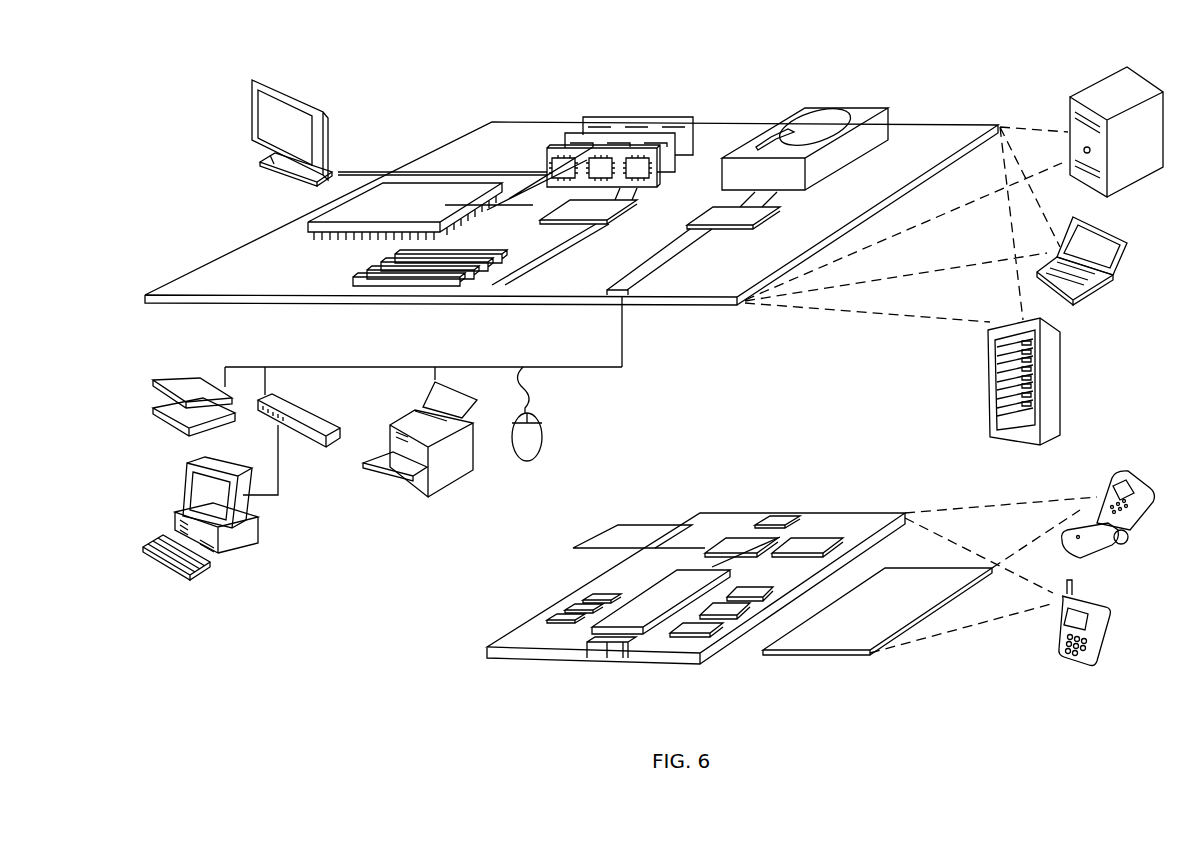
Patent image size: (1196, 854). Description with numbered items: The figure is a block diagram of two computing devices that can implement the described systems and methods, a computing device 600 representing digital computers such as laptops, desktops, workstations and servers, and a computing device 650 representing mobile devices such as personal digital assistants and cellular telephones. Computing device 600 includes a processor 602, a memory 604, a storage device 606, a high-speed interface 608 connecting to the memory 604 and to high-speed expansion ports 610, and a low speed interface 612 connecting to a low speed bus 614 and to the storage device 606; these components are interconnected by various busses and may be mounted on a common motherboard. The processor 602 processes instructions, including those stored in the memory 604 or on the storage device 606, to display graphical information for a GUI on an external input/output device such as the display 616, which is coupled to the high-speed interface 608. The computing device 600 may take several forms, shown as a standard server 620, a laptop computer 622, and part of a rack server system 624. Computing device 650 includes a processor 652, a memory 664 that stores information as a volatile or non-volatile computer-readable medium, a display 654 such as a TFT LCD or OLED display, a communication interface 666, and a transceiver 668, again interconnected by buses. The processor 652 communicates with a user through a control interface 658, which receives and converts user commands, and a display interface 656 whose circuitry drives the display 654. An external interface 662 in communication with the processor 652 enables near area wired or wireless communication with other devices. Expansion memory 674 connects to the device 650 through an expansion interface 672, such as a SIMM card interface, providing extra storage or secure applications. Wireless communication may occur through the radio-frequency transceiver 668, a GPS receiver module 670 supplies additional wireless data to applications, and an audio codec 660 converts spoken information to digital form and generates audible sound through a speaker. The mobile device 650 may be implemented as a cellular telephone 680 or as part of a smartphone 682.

The computing device 600 is at (424, 101).
The processor 602 is at (307, 224).
The memory 604 is at (603, 118).
The storage device 606 is at (800, 110).
The high-speed interface 608 is at (563, 203).
The high-speed expansion ports 610 is at (358, 273).
The low speed interface 612 is at (718, 213).
The low speed bus 614 is at (628, 292).
The display 616 is at (254, 80).
The standard server 620 is at (1067, 116).
The laptop computer 622 is at (1125, 236).
The rack server system 624 is at (988, 404).
The computing device 650 is at (468, 656).
The processor 652 is at (638, 622).
The display 654 is at (848, 640).
The display interface 656 is at (700, 628).
The control interface 658 is at (737, 608).
The audio codec 660 is at (748, 590).
The external interface 662 is at (607, 653).
The memory 664 is at (565, 618).
The communication interface 666 is at (743, 545).
The transceiver 668 is at (810, 542).
The GPS receiver module 670 is at (790, 514).
The expansion interface 672 is at (676, 524).
The expansion memory 674 is at (616, 524).
The cellular telephone 680 is at (1112, 482).
The smartphone 682 is at (1060, 627).